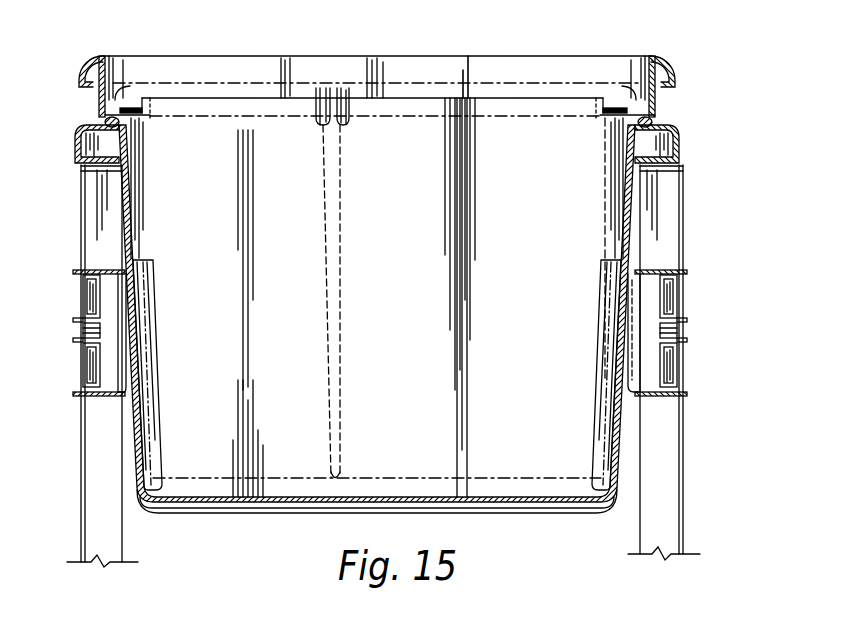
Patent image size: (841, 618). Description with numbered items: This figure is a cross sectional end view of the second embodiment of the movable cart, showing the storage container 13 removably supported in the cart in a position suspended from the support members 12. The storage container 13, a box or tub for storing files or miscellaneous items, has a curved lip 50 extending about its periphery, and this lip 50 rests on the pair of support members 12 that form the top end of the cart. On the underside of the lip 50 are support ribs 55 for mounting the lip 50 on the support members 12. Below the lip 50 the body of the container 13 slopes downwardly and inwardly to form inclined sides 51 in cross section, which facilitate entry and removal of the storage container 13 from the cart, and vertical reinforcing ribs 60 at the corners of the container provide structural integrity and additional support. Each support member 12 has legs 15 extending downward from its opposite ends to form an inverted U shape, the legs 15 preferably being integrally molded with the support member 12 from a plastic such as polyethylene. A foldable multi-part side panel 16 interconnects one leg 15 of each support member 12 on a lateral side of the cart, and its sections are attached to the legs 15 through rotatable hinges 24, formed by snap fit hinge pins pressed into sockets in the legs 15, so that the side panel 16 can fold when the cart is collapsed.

The storage container 13 is at (538, 54).
The curved lip 50 is at (104, 116).
The support ribs 55 is at (108, 124).
The support member 12 is at (76, 140).
The inclined sides 51 is at (133, 441).
The legs 15 is at (80, 202).
The side panel 16 is at (641, 285).
The rotatable hinges 24 is at (80, 308).
The vertical reinforcing ribs 60 is at (157, 296).